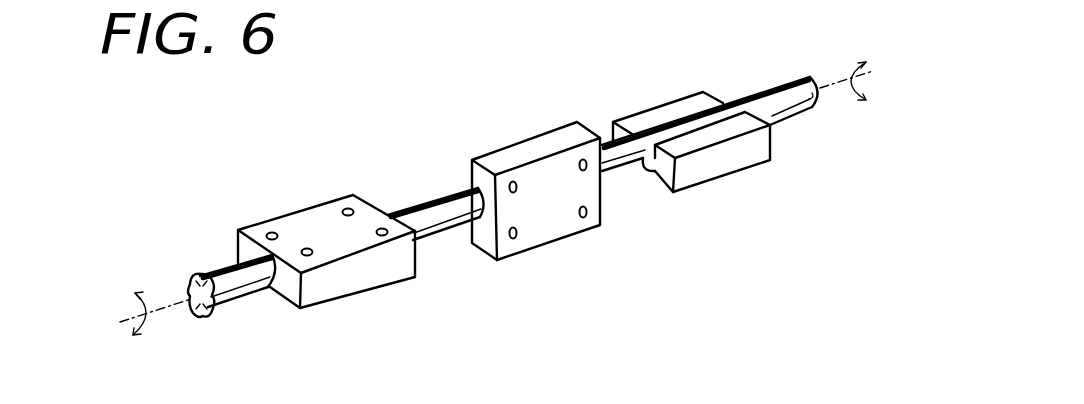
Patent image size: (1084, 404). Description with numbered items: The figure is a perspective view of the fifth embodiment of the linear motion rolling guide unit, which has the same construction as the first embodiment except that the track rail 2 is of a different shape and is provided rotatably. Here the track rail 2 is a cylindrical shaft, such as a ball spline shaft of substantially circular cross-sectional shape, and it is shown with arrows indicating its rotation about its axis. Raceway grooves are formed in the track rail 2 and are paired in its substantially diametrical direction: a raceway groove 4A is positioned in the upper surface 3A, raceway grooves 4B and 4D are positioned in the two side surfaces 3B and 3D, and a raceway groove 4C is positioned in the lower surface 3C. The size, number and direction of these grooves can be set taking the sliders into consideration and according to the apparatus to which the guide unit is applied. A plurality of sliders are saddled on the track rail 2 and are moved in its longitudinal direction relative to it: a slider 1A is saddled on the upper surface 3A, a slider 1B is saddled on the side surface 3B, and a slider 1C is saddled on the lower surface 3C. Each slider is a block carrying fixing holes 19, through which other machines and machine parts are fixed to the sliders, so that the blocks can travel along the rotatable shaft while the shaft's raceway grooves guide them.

The slider 1A is at (317, 228).
The slider 1B is at (547, 213).
The slider 1C is at (727, 157).
The track rail 2 is at (777, 100).
The upper surface 3A is at (402, 213).
The side surface 3B is at (622, 161).
The lower surface 3C is at (223, 311).
The side surface 3D is at (193, 306).
The raceway groove 4A is at (440, 193).
The raceway groove 4B is at (438, 222).
The raceway groove 4C is at (200, 310).
The raceway groove 4D is at (192, 295).
The fixing holes 19 is at (271, 232).